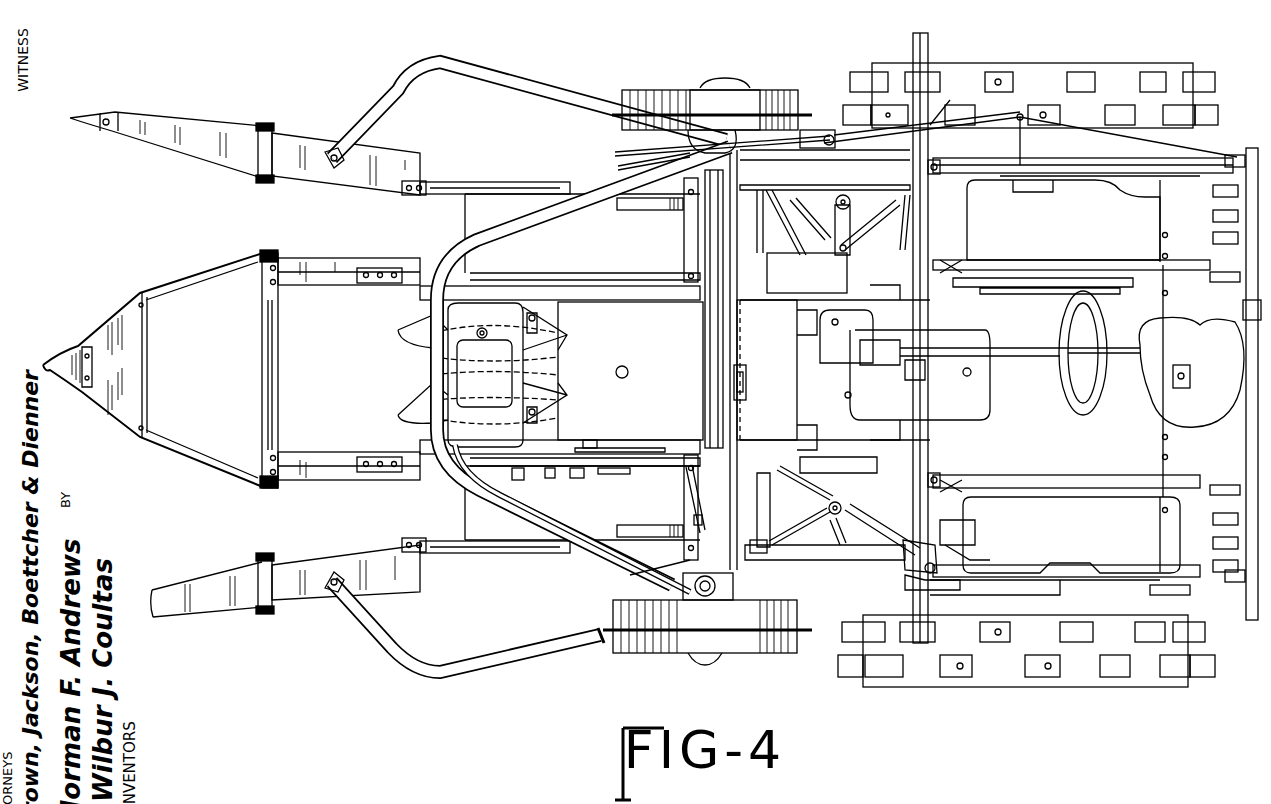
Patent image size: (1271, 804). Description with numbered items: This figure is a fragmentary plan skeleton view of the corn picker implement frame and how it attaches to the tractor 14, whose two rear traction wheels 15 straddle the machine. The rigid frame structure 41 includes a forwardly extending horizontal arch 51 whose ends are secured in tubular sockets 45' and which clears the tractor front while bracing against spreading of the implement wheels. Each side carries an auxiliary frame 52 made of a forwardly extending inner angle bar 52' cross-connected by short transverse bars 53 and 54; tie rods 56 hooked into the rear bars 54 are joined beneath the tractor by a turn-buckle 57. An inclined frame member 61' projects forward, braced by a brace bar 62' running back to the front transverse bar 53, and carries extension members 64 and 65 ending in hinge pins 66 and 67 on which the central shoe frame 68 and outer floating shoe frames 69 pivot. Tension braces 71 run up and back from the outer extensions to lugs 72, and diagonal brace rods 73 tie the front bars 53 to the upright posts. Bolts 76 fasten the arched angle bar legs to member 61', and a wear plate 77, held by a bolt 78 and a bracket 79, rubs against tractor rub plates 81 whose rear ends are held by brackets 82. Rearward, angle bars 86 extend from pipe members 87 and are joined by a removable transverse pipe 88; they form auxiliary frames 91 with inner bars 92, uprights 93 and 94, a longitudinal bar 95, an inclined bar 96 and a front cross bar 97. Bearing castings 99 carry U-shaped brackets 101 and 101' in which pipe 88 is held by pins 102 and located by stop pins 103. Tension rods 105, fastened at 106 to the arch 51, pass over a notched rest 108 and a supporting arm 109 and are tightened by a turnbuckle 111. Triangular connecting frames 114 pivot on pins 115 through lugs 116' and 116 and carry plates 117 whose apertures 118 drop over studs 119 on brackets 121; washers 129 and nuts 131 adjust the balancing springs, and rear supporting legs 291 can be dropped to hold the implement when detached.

The tractor 14 is at (630, 371).
The rear traction wheels 15 is at (1183, 72).
The rigid frame structure 41 is at (705, 338).
The tubular sockets 45' is at (707, 361).
The horizontal arch 51 is at (430, 370).
The auxiliary frames 52 is at (582, 367).
The inner longitudinal angle bar 52' is at (620, 436).
The front transverse angle bar 53 is at (684, 231).
The rear transverse angle bar 54 is at (757, 252).
The tie rods 56 is at (743, 347).
The turn-buckle 57 is at (747, 385).
The inner inclined frame member 61' is at (582, 485).
The inner brace bar 62' is at (708, 528).
The inner extension member 64 is at (318, 460).
The outer extension member 65 is at (300, 575).
The hinge pin 66 is at (262, 254).
The hinge pin 67 is at (262, 182).
The central shoe frame 68 is at (118, 320).
The outer floating shoe frames 69 is at (190, 150).
The tension braces 71 is at (508, 85).
The brackets or lugs 72 is at (721, 345).
The diagonal brace rods 73 is at (699, 510).
The bolts 76 is at (550, 478).
The wear plate 77 is at (518, 480).
The bolt 78 is at (500, 498).
The bracket 79 is at (625, 475).
The rub plates 81 is at (539, 371).
The brackets 82 is at (590, 440).
The angle bars 86 is at (818, 148).
The pipe members 87 is at (752, 95).
The transverse pipe 88 is at (1250, 310).
The auxiliary frame structures 91 is at (1185, 178).
The inner parallel bar 92 is at (962, 263).
The vertical angle member 93 is at (1083, 367).
The vertical angle member 94 is at (936, 266).
The longitudinal bar 95 is at (1096, 178).
The inclined bar 96 is at (1085, 262).
The transverse angle bar 97 is at (913, 49).
The husking roll bearing supporting casting 99 is at (1213, 216).
The U-shaped bracket 101 is at (1208, 379).
The inner U-shaped bracket 101' is at (1204, 383).
The pins 102 is at (1246, 478).
The stop pins 103 is at (1213, 238).
The tension rods 105 is at (626, 165).
The forward fastening point 106 is at (578, 183).
The notched rest 108 is at (665, 151).
The supporting arm 109 is at (1022, 115).
The turnbuckle 111 is at (815, 130).
The connecting frame structures 114 is at (842, 240).
The pivot pins 115 is at (772, 502).
The link 116 is at (786, 222).
The inner pivot lug 116' is at (808, 380).
The plates 117 is at (905, 570).
The apertures 118 is at (905, 588).
The stud pins 119 is at (960, 530).
The brackets 121 is at (960, 565).
The washers 129 is at (858, 240).
The nuts 131 is at (892, 225).
The rear supporting legs 291 is at (815, 232).